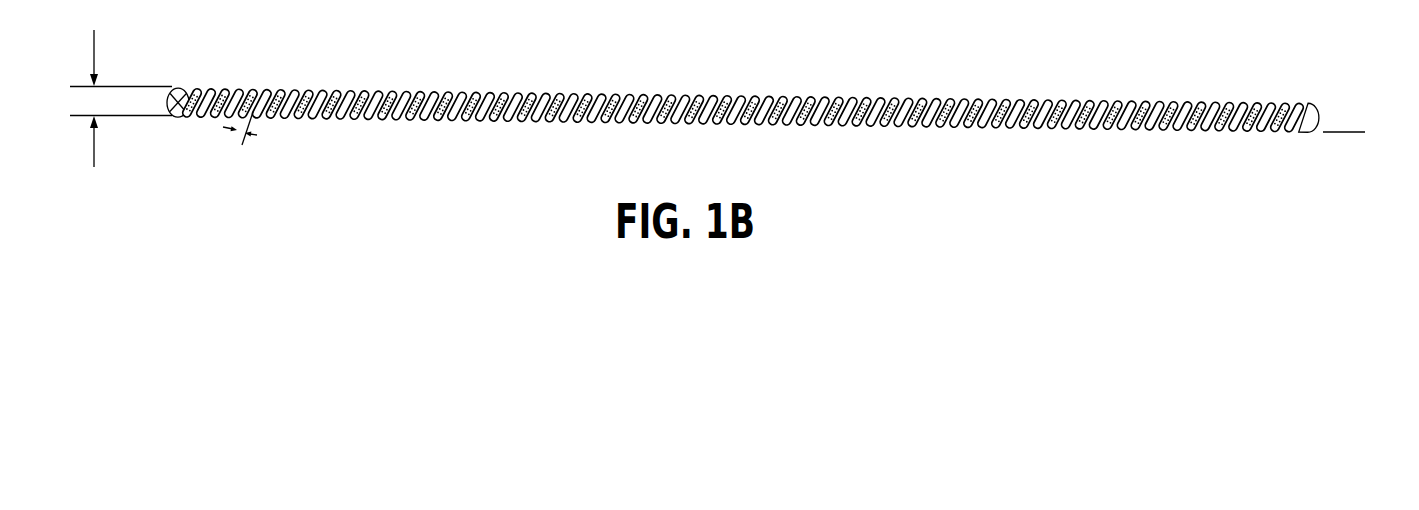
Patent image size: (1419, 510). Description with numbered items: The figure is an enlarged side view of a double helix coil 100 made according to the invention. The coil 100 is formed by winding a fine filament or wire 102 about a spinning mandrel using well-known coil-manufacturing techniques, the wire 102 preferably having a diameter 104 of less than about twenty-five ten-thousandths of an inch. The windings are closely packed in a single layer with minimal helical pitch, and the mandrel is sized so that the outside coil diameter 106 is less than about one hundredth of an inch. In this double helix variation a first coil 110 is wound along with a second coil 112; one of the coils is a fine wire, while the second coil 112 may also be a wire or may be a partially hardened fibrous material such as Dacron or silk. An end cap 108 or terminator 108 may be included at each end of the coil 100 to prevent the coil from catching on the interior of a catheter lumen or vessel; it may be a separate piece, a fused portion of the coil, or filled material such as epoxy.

The coil 100 is at (358, 154).
The wire 102 is at (303, 90).
The wire diameter 104 is at (245, 112).
The outside coil diameter 106 is at (121, 98).
The end cap 108 is at (170, 116).
The first coil 110 is at (505, 121).
The second coil 112 is at (436, 120).